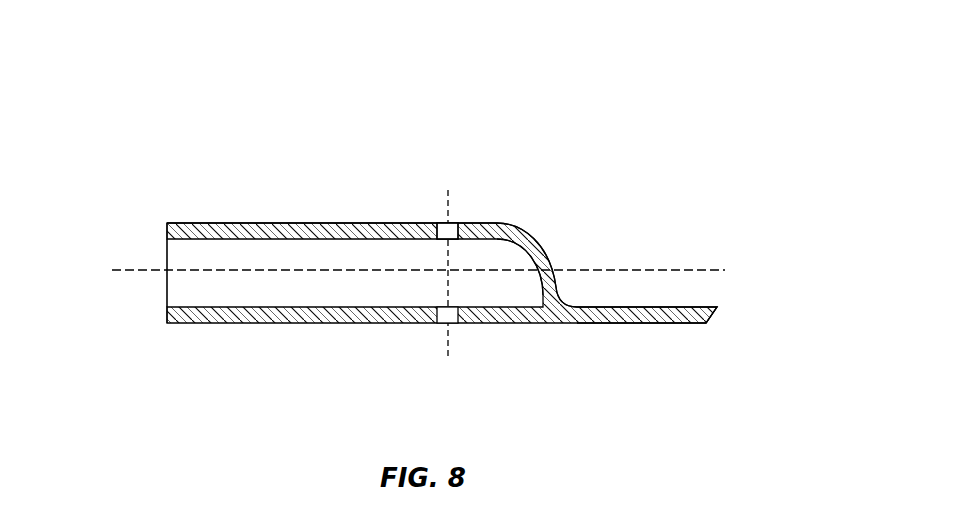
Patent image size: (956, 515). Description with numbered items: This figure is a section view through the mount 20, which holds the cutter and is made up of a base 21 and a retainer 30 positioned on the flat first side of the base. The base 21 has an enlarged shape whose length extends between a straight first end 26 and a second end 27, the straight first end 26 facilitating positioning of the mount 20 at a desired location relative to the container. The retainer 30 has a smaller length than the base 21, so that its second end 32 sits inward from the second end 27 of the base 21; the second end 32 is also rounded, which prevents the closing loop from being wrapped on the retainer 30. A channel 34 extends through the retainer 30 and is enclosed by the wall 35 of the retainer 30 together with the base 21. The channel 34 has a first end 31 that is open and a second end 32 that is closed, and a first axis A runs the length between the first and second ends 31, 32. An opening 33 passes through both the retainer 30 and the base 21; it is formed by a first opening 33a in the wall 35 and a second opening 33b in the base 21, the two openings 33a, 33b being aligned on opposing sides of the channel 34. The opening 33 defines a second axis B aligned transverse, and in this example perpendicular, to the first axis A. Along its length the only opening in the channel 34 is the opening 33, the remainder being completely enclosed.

The mount 20 is at (619, 70).
The base 21 is at (673, 307).
The first end 26 is at (167, 268).
The second end 27 is at (713, 315).
The retainer 30 is at (210, 223).
The first end 31 is at (167, 272).
The second end 32 is at (513, 227).
The opening 33 is at (450, 221).
The first opening 33a is at (458, 223).
The second opening 33b is at (438, 323).
The channel 34 is at (266, 275).
The wall 35 is at (355, 223).
The first axis A is at (633, 270).
The second axis B is at (448, 333).